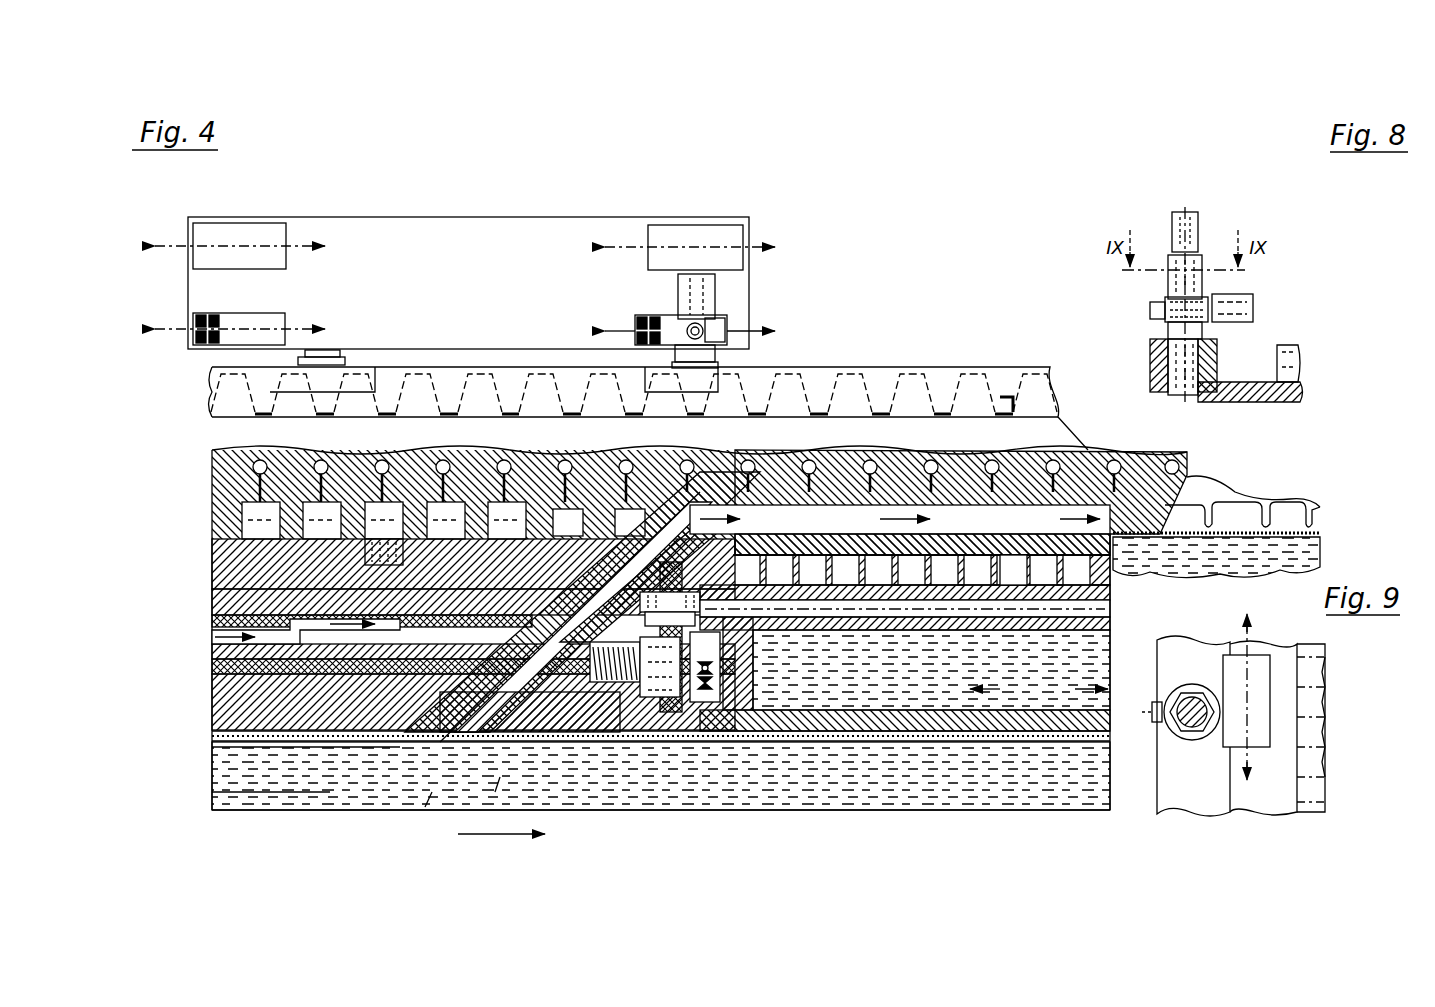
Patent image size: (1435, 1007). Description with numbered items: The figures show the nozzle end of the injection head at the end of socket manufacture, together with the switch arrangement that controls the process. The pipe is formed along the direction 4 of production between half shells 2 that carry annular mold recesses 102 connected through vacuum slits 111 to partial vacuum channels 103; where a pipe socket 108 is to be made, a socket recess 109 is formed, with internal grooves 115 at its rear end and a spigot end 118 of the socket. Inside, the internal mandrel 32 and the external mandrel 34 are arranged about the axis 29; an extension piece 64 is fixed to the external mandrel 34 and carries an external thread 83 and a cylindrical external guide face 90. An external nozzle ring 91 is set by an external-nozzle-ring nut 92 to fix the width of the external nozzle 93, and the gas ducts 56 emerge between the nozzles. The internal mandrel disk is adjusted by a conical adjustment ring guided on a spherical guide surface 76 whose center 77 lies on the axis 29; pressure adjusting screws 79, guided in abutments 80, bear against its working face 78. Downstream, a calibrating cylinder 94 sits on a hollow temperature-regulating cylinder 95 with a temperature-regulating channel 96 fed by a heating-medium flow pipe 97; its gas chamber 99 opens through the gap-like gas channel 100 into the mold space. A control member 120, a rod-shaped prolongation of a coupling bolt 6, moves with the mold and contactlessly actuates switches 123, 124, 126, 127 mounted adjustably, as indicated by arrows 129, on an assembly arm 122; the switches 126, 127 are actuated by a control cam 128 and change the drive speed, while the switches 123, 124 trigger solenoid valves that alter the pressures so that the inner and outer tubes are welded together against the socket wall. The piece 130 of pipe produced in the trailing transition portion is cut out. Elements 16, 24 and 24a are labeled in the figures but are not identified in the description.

In FIG. 4, the half shell 2 is at (990, 393).
In FIG. 8, the half shell 2 is at (1300, 392).
In FIG. 9, the half shell 2 is at (1240, 795).
In FIG. 4, the direction of production 4 is at (493, 832).
In FIG. 8, the coupling bolt 6 is at (1217, 350).
In FIG. 4, the post / rack 16 is at (1015, 385).
In FIG. 8, the post / rack 16 is at (1298, 350).
In FIG. 9, the post / rack 16 is at (1315, 785).
In FIG. 4, the belt 24 is at (1260, 500).
In FIG. 4, the belt edge 24a is at (1225, 498).
In FIG. 4, the axis 29 is at (250, 808).
In FIG. 4, the internal mandrel 32 is at (215, 792).
In FIG. 4, the external mandrel 34 is at (230, 690).
In FIG. 4, the gas ducts 56 is at (245, 638).
In FIG. 4, the extension piece 64 is at (215, 742).
In FIG. 4, the spherical ring-shaped guide surface 76 is at (510, 720).
In FIG. 4, the center 77 is at (560, 700).
In FIG. 4, the working face 78 is at (610, 680).
In FIG. 4, the pressure adjusting screws 79 is at (708, 705).
In FIG. 4, the abutments 80 is at (700, 690).
In FIG. 4, the external thread 83 is at (330, 750).
In FIG. 4, the external guide face 90 is at (400, 740).
In FIG. 4, the external nozzle ring 91 is at (300, 612).
In FIG. 4, the external-nozzle-ring nut 92 is at (330, 556).
In FIG. 4, the external nozzle 93 is at (482, 540).
In FIG. 4, the calibrating cylinder 94 is at (1060, 600).
In FIG. 4, the temperature-regulating cylinder 95 is at (1030, 610).
In FIG. 4, the temperature-regulating channel 96 is at (1010, 560).
In FIG. 4, the heating-medium flow pipe 97 is at (960, 572).
In FIG. 4, the gas chamber 99 is at (900, 660).
In FIG. 4, the gap-like gas channel 100 is at (740, 505).
In FIG. 4, the annular mold recesses 102 is at (262, 520).
In FIG. 4, the partial vacuum channels 103 is at (212, 450).
In FIG. 4, the pipe socket 108 is at (965, 437).
In FIG. 4, the socket recess 109 is at (850, 520).
In FIG. 4, the vacuum slits 111 is at (245, 468).
In FIG. 4, the internal grooves 115 is at (800, 540).
In FIG. 4, the spigot end 118 is at (640, 500).
In FIG. 4, the control member 120 is at (700, 285).
In FIG. 8, the control member 120 is at (1202, 265).
In FIG. 4, the assembly arm 122 is at (308, 225).
In FIG. 4, the switch 123 is at (205, 242).
In FIG. 8, the switch 123 is at (1185, 212).
In FIG. 4, the switch 124 is at (683, 235).
In FIG. 4, the switch 126 is at (300, 322).
In FIG. 8, the switch 126 is at (1252, 305).
In FIG. 9, the switch 126 is at (1255, 735).
In FIG. 4, the switch 127 is at (727, 325).
In FIG. 4, the control cam 128 is at (690, 520).
In FIG. 8, the control cam 128 is at (1165, 305).
In FIG. 9, the control cam 128 is at (1185, 730).
In FIG. 4, the arrows 129 is at (300, 335).
In FIG. 4, the piece of pipe 130 is at (600, 560).